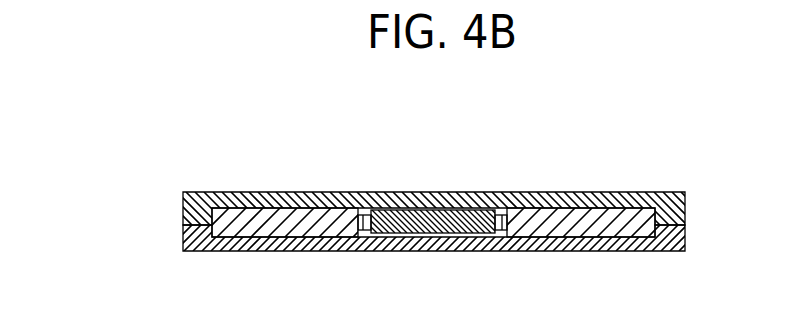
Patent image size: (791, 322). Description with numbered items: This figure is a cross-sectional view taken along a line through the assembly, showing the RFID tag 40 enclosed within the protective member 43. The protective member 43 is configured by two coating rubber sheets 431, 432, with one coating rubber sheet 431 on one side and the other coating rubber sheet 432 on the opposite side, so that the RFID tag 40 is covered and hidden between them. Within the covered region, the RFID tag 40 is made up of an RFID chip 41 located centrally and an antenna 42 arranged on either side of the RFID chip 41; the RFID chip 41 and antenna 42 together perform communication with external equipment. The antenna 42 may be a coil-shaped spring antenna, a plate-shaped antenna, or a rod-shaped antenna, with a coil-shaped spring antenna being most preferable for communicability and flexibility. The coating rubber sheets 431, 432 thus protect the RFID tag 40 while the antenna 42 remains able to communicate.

The RFID tag 40 is at (430, 160).
The RFID chip 41 is at (333, 137).
The antenna 42 is at (335, 193).
The protective member 43 is at (371, 237).
The coating rubber sheet 431 is at (400, 253).
The coating rubber sheet 432 is at (184, 204).